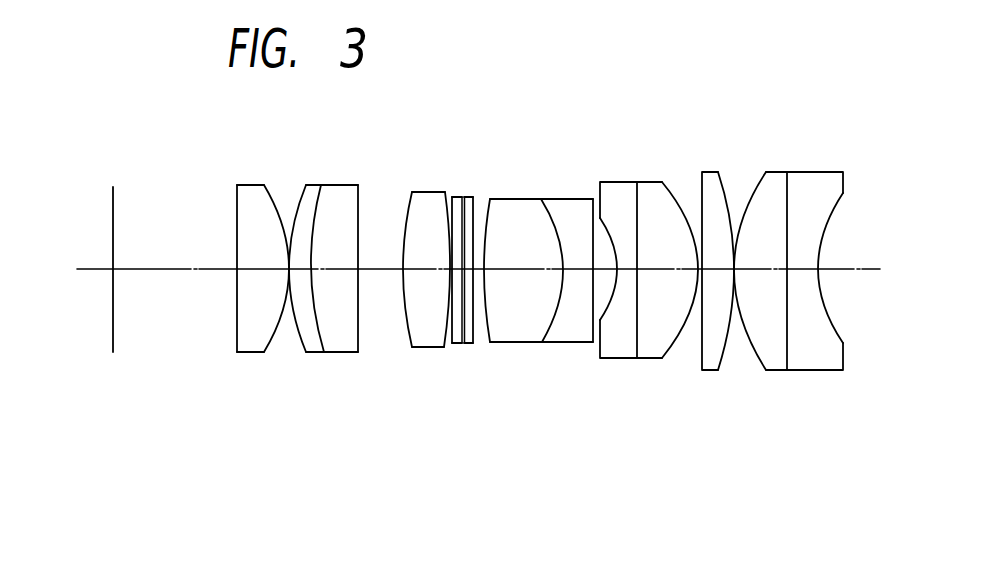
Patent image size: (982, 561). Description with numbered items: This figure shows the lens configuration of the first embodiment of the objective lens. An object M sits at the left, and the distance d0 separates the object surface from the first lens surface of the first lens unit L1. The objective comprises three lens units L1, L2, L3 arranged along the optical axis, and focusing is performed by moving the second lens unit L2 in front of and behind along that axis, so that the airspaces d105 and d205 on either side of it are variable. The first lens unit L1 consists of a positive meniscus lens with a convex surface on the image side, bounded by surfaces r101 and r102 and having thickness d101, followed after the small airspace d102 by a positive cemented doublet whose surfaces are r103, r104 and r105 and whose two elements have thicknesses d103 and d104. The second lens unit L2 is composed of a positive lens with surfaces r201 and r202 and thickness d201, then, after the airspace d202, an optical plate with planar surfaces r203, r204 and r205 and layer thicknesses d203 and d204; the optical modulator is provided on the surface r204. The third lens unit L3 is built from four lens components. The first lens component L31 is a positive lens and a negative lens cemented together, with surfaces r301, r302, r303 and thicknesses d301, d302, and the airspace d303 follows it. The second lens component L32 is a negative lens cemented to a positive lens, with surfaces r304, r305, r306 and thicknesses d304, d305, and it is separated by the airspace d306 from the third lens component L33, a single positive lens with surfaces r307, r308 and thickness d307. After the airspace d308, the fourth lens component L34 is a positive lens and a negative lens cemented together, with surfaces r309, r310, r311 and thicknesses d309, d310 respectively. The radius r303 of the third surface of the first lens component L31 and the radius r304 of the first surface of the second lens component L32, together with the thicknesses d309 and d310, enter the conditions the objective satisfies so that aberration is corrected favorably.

The object M is at (113, 337).
The object distance d0 is at (163, 269).
The lens thickness d101 is at (260, 269).
The airspace d102 is at (288, 269).
The lens thickness d103 is at (302, 269).
The lens thickness d104 is at (339, 269).
The variable airspace d105 is at (382, 269).
The lens thickness d201 is at (420, 269).
The airspace d202 is at (448, 269).
The plate thickness d203 is at (455, 269).
The plate thickness d204 is at (466, 269).
The variable airspace d205 is at (481, 269).
The lens thickness d301 is at (510, 269).
The lens thickness d302 is at (573, 269).
The airspace d303 is at (588, 269).
The lens thickness d304 is at (630, 269).
The lens thickness d305 is at (655, 269).
The airspace d306 is at (690, 269).
The lens thickness d307 is at (706, 269).
The airspace d308 is at (736, 269).
The lens thickness d309 is at (753, 270).
The lens thickness d310 is at (800, 270).
The lens surface radius of curvature r101 is at (236, 347).
The lens surface radius of curvature r102 is at (273, 346).
The lens surface radius of curvature r103 is at (300, 345).
The lens surface radius of curvature r104 is at (332, 346).
The lens surface radius of curvature r105 is at (367, 346).
The lens surface radius of curvature r201 is at (409, 345).
The lens surface radius of curvature r202 is at (438, 345).
The lens surface radius of curvature r203 is at (457, 345).
The lens surface radius of curvature r204 is at (467, 345).
The lens surface radius of curvature r205 is at (477, 345).
The lens surface radius of curvature r301 is at (491, 344).
The lens surface radius of curvature r302 is at (552, 344).
The lens surface radius of curvature r303 is at (590, 345).
The lens surface radius of curvature r304 is at (611, 360).
The lens surface radius of curvature r305 is at (643, 358).
The lens surface radius of curvature r306 is at (671, 360).
The lens surface radius of curvature r307 is at (702, 360).
The lens surface radius of curvature r308 is at (720, 362).
The lens surface radius of curvature r309 is at (762, 358).
The lens surface radius of curvature r310 is at (788, 372).
The lens surface radius of curvature r311 is at (837, 372).
The first lens unit L1 is at (365, 481).
The second lens unit L2 is at (478, 481).
The third lens unit L3 is at (858, 485).
The first lens component L31 is at (588, 84).
The second lens component L32 is at (673, 84).
The third lens component L33 is at (737, 84).
The fourth lens component L34 is at (842, 84).